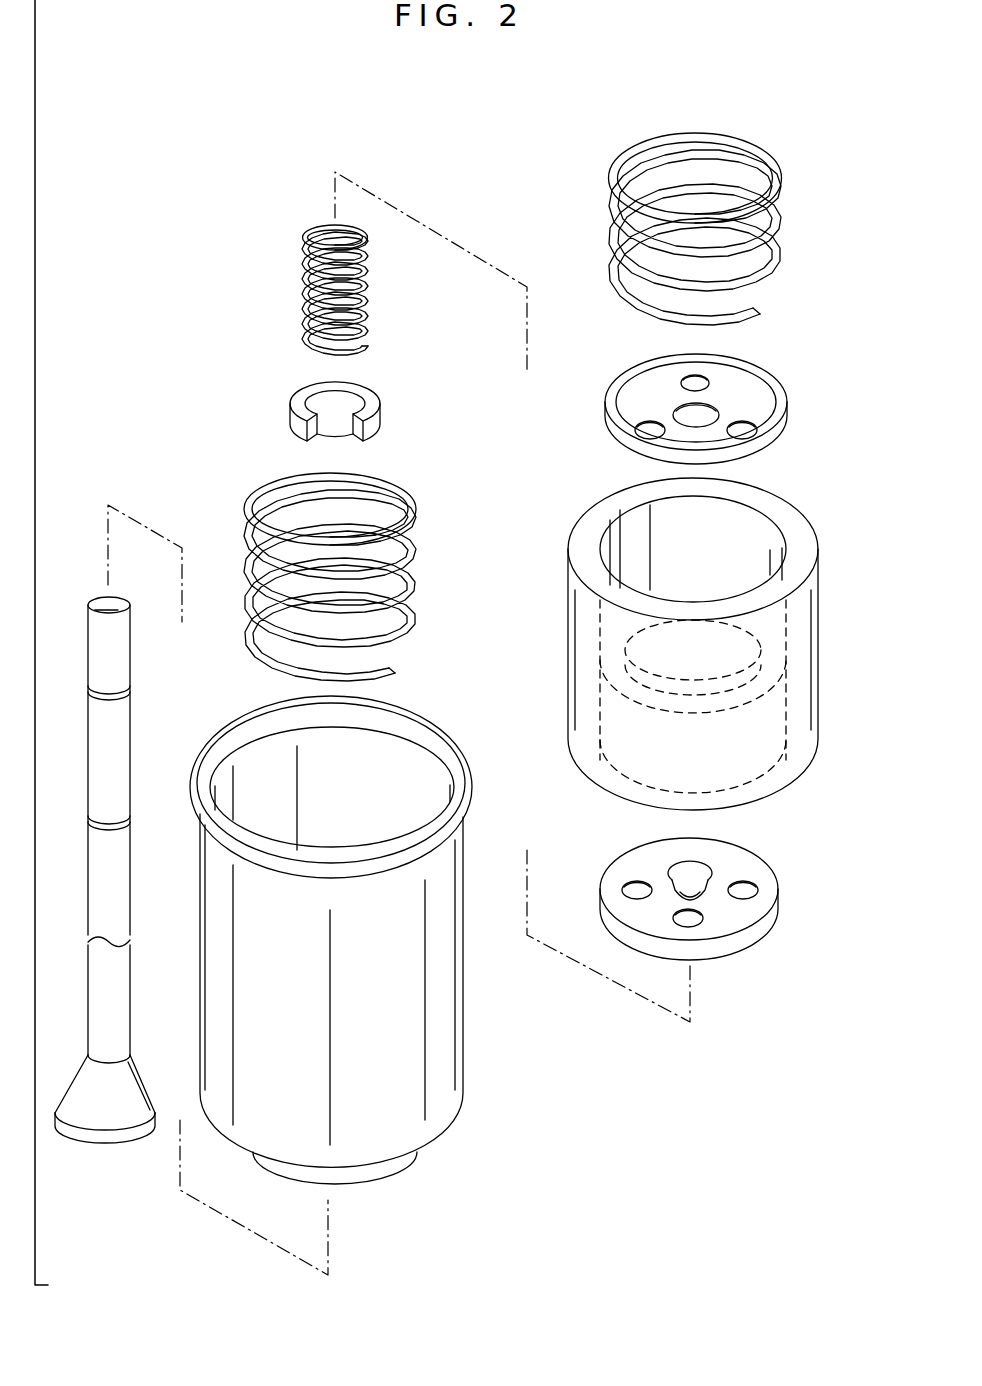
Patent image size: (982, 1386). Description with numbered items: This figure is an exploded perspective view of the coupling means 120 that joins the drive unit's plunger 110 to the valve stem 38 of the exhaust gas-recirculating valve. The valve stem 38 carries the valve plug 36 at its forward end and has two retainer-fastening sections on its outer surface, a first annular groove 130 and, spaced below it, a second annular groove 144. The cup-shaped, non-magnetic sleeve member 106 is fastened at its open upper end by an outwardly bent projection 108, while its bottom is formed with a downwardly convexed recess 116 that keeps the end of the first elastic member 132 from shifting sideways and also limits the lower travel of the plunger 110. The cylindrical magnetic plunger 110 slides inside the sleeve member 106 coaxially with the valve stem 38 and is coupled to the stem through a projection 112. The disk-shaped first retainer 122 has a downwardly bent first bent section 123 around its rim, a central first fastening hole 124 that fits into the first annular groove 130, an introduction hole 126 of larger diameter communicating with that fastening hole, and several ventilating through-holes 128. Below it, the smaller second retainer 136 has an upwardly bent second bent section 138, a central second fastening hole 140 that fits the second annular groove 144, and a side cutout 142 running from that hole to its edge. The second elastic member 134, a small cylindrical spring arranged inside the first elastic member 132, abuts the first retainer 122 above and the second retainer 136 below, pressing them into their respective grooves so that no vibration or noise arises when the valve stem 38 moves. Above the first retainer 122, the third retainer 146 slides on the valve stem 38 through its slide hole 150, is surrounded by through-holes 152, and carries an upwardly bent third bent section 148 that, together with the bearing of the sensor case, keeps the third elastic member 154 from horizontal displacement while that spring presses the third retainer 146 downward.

The coupling means 120 is at (215, 110).
The second elastic member 134 is at (305, 240).
The second bent section 138 is at (357, 388).
The second retainer 136 is at (378, 432).
The cutout 142 is at (303, 445).
The second fastening hole 140 is at (441, 477).
The first elastic member 132 is at (412, 512).
The projection 108 is at (443, 727).
The sleeve member 106 is at (467, 1018).
The recess 116 is at (397, 1168).
The valve stem 38 is at (128, 962).
The first annular groove 130 is at (195, 693).
The second annular groove 144 is at (112, 815).
The valve plug 36 is at (100, 1145).
The third elastic member 154 is at (745, 145).
The through-holes 152 is at (700, 383).
The slide hole 150 is at (675, 415).
The third bent section 148 is at (765, 377).
The third retainer 146 is at (782, 428).
The plunger 110 is at (800, 513).
The projection 112 is at (600, 630).
The introduction hole 126 is at (672, 870).
The ventilating through-holes 128 is at (748, 885).
The first retainer 122 is at (780, 894).
The first bent section 123 is at (778, 922).
The first fastening hole 124 is at (705, 895).